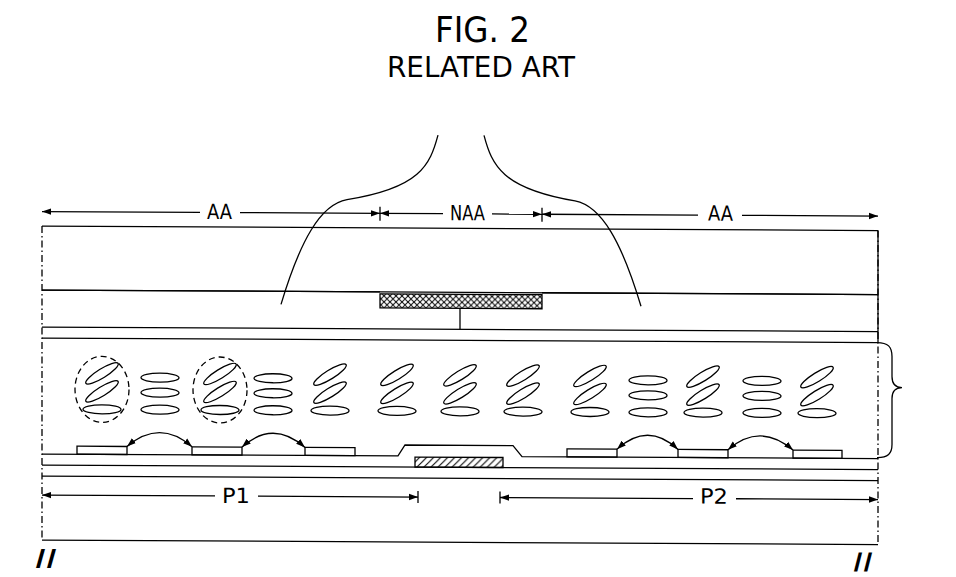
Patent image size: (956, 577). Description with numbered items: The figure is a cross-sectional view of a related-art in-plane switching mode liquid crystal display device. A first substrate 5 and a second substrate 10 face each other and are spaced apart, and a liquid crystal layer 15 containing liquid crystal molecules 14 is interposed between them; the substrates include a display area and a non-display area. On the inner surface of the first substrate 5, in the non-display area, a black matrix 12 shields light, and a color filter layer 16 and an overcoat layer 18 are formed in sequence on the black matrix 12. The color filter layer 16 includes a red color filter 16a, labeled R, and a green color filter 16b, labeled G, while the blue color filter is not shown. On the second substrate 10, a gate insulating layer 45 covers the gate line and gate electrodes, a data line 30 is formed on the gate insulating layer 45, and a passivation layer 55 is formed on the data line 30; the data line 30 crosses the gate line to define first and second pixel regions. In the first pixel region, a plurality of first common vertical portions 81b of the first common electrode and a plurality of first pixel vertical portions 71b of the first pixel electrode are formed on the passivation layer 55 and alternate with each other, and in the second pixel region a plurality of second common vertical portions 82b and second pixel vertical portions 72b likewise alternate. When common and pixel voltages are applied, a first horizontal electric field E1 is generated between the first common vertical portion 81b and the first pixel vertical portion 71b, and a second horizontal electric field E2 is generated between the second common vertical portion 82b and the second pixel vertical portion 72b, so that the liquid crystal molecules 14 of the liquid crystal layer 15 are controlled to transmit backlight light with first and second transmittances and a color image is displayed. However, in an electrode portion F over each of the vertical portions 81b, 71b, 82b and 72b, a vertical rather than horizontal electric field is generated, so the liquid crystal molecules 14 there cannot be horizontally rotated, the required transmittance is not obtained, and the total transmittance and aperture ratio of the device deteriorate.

The first substrate 5 is at (858, 261).
The second substrate 10 is at (866, 536).
The black matrix 12 is at (441, 292).
The liquid crystal molecules 14 is at (762, 372).
The liquid crystal layer 15 is at (904, 400).
The color filter layer 16 is at (477, 116).
The red color filter 16a is at (368, 208).
The green color filter 16b is at (557, 209).
The overcoat layer 18 is at (428, 339).
The data line 30 is at (477, 455).
The gate insulating layer 45 is at (383, 471).
The passivation layer 55 is at (543, 455).
The first pixel vertical portions 71b is at (201, 446).
The second pixel vertical portions 72b is at (722, 446).
The first common vertical portions 81b is at (78, 446).
The second common vertical portions 82b is at (598, 446).
The first horizontal electric field E1 is at (279, 436).
The second horizontal electric field E2 is at (655, 436).
The electrode portion F is at (213, 357).
The red color filter R is at (211, 304).
The green color filter G is at (710, 307).